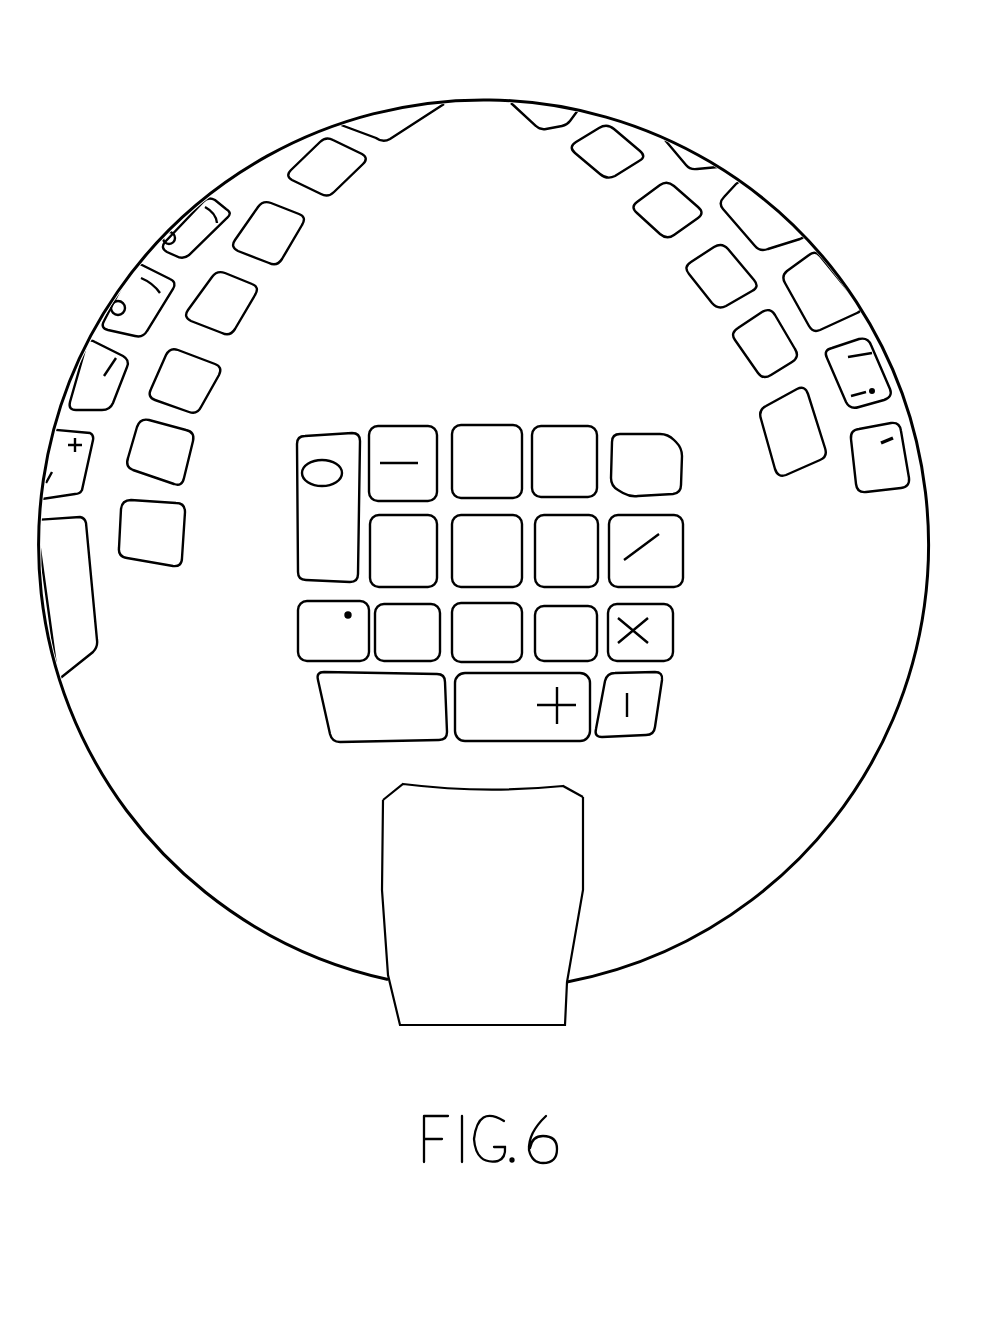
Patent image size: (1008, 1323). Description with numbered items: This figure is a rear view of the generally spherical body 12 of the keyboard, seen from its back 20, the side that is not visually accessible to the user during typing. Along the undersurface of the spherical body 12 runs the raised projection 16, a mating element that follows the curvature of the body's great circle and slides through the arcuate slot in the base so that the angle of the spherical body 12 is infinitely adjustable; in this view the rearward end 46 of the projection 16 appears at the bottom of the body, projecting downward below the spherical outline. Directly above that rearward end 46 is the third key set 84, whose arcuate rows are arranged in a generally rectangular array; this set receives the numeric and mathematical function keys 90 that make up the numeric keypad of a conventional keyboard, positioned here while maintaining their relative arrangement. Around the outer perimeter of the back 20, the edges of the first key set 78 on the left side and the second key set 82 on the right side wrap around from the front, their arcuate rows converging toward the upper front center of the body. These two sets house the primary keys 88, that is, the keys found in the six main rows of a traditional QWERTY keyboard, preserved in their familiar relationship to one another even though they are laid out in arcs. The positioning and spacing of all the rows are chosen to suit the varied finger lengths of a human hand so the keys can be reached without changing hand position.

The spherical body 12 is at (474, 101).
The raised projection 16 is at (580, 909).
The back 20 is at (495, 327).
The ends of the projection 46 is at (408, 790).
The first key set 78 is at (831, 488).
The second key set 82 is at (150, 575).
The third key set 84 is at (697, 568).
The primary keys 88 is at (636, 218).
The numeric and mathematical function keys 90 is at (545, 534).